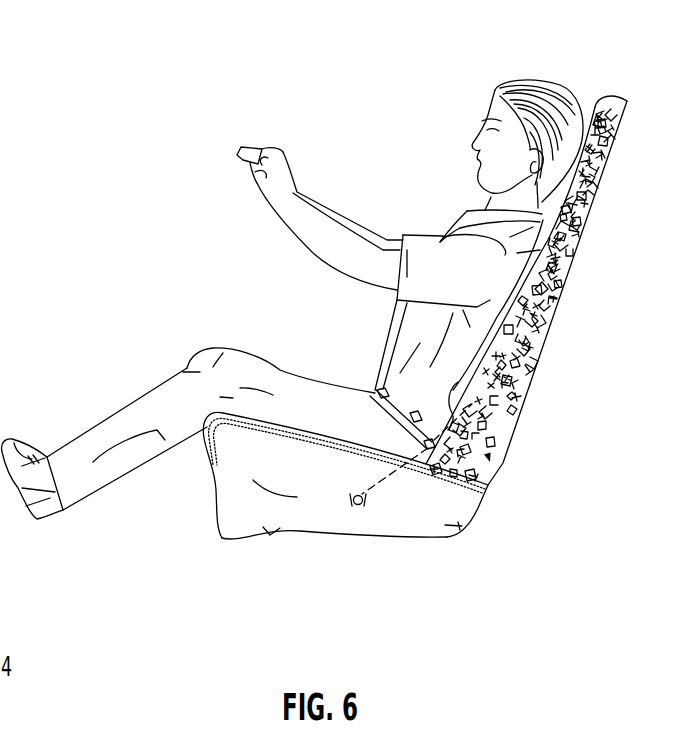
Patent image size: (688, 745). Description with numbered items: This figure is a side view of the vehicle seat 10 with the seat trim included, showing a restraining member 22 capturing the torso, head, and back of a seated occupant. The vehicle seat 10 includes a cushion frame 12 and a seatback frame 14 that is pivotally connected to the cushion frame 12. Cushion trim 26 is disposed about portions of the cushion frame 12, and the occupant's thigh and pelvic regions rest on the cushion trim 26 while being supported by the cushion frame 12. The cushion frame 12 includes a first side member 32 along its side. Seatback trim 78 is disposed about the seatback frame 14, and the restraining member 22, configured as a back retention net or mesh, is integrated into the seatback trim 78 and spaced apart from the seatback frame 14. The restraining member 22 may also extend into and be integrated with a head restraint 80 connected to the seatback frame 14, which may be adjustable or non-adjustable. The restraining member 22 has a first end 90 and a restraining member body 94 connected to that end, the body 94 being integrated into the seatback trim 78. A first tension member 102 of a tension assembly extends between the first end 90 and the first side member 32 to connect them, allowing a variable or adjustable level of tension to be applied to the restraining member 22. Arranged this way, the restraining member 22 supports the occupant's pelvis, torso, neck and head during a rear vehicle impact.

The vehicle seat 10 is at (594, 62).
The cushion frame 12 is at (242, 522).
The seatback frame 14 is at (580, 219).
The restraining member 22 is at (504, 464).
The cushion trim 26 is at (303, 517).
The first side member 32 is at (347, 488).
The seatback trim 78 is at (492, 358).
The head restraint 80 is at (623, 102).
The first end 90 is at (420, 446).
The restraining member body 94 is at (553, 320).
The first tension member 102 is at (388, 497).